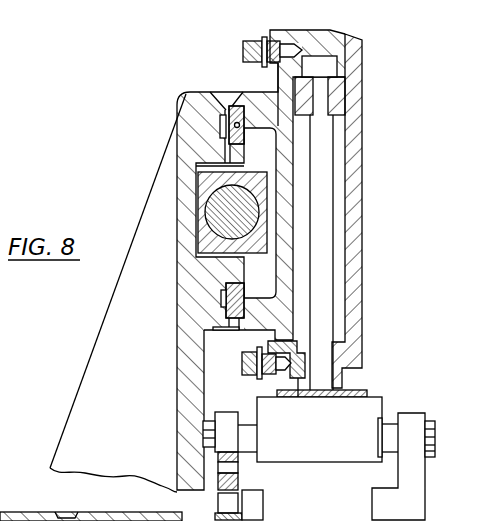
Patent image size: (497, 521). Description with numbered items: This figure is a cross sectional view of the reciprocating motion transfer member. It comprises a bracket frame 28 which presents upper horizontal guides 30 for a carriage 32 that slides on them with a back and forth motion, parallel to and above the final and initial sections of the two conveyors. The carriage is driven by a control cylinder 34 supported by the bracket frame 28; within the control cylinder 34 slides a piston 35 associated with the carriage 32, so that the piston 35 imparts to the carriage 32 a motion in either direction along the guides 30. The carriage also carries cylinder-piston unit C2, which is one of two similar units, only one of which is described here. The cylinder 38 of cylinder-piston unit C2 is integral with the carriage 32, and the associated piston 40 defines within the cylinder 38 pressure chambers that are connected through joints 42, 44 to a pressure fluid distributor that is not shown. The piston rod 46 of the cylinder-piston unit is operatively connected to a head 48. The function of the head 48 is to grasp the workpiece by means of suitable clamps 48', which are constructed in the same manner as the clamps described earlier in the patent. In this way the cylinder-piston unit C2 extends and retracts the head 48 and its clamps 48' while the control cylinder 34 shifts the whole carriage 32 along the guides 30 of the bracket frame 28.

The bracket frame 28 is at (186, 298).
The upper horizontal guides 30 is at (235, 92).
The carriage 32 is at (280, 252).
The control cylinder 34 is at (200, 172).
The piston 35 is at (218, 210).
The cylinder 38 is at (357, 195).
The piston 40 is at (357, 83).
The joint 42 is at (257, 366).
The joint 44 is at (247, 48).
The piston rod 46 is at (322, 303).
The head 48 is at (317, 445).
The clamps 48' is at (424, 466).
The cylinder-piston unit C2 is at (368, 140).